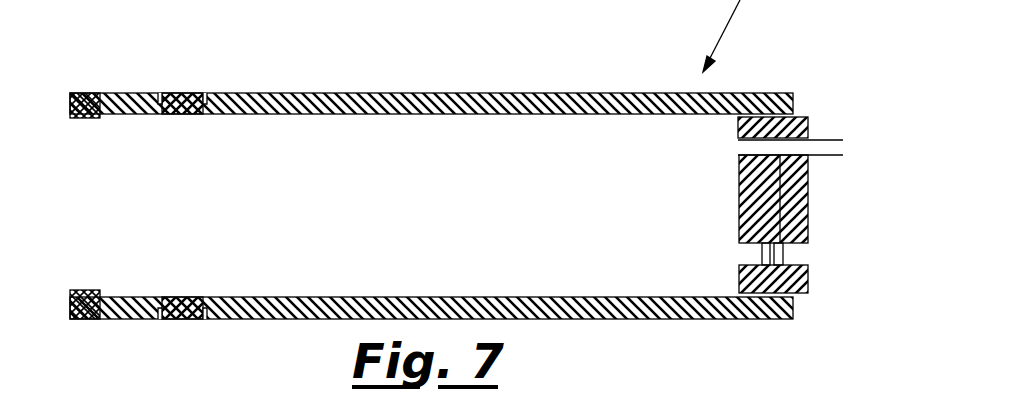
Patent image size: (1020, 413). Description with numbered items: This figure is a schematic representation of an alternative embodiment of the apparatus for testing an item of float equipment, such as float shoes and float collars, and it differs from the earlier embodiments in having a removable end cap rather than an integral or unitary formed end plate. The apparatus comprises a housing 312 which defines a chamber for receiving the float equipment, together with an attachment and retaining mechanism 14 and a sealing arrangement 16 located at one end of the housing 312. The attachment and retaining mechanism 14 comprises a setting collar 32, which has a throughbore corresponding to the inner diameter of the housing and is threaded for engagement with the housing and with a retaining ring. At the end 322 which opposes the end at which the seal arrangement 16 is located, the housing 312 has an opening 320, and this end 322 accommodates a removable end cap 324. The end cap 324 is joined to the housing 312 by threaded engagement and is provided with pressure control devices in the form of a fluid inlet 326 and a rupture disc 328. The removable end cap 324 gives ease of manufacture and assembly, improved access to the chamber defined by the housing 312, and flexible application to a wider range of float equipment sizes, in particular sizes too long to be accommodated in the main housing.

The attachment and retaining mechanism 14 is at (178, 328).
The sealing arrangement 16 is at (431, 73).
The setting collar 32 is at (186, 93).
The housing 312 is at (431, 72).
The opening 320 is at (821, 183).
The end 322 is at (797, 100).
The fluid inlet 326 is at (812, 147).
The removable end cap 324 is at (810, 172).
The rupture disc 328 is at (796, 299).